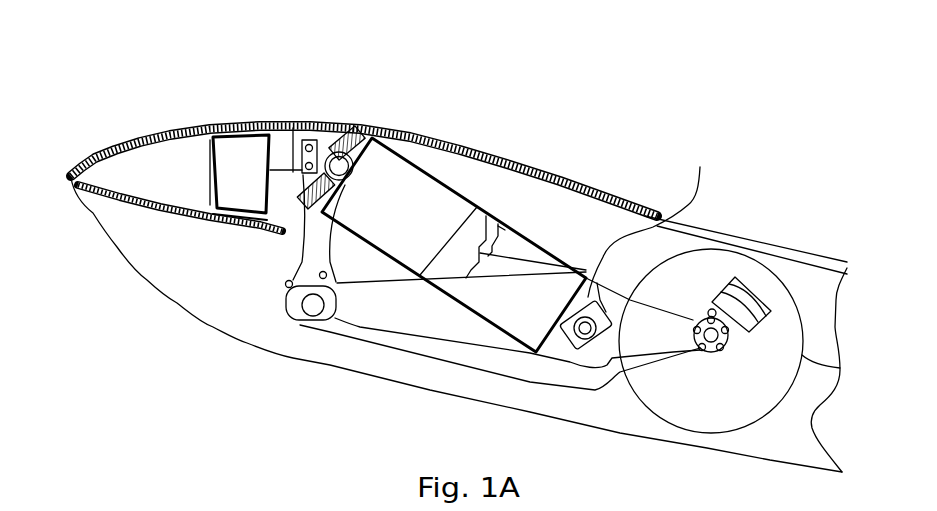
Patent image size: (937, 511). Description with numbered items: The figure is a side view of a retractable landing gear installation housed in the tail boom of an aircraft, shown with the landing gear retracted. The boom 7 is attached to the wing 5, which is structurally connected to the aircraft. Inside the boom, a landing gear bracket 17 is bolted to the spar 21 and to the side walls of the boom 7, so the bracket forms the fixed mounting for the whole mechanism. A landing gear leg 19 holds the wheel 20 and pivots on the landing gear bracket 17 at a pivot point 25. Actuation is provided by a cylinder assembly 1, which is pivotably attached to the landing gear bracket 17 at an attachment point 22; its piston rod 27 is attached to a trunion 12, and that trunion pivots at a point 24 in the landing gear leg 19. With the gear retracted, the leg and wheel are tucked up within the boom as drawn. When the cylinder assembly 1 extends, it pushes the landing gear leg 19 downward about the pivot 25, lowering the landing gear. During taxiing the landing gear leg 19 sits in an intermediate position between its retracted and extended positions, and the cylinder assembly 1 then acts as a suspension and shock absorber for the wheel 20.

The cylinder assembly 1 is at (513, 207).
The wing 5 is at (130, 132).
The boom 7 is at (147, 285).
The trunion 12 is at (695, 284).
The landing gear bracket 17 is at (293, 124).
The landing gear leg 19 is at (412, 345).
The wheel 20 is at (838, 367).
The spar 21 is at (237, 125).
The pivot attachment point of cylinder assembly 22 is at (333, 131).
The pivot point of trunion 24 is at (583, 335).
The pivot point of landing gear leg 25 is at (305, 303).
The piston rod 27 is at (497, 262).